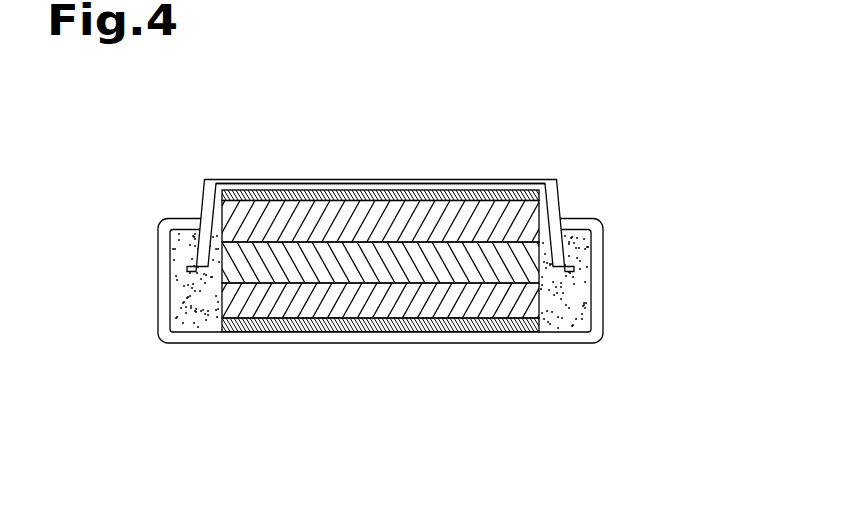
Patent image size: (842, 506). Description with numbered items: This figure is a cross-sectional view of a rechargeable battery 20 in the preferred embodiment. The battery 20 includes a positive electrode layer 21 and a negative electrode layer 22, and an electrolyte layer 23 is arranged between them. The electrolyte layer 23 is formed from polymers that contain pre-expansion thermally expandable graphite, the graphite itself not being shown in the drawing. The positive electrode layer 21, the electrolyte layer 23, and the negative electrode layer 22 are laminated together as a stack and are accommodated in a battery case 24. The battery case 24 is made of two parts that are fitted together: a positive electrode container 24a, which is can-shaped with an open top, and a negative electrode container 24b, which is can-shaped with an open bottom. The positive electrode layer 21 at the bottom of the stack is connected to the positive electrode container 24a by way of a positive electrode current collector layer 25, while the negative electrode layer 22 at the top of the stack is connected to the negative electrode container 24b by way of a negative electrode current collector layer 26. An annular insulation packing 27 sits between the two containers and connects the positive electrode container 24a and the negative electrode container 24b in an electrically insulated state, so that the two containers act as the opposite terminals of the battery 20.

The rechargeable battery 20 is at (209, 146).
The positive electrode layer 21 is at (465, 318).
The negative electrode layer 22 is at (386, 200).
The electrolyte layer 23 is at (490, 238).
The battery case 24 is at (697, 195).
The positive electrode container 24a is at (601, 257).
The negative electrode container 24b is at (553, 213).
The positive electrode current collector layer 25 is at (341, 327).
The negative electrode current collector layer 26 is at (302, 188).
The annular insulation packing 27 is at (190, 323).